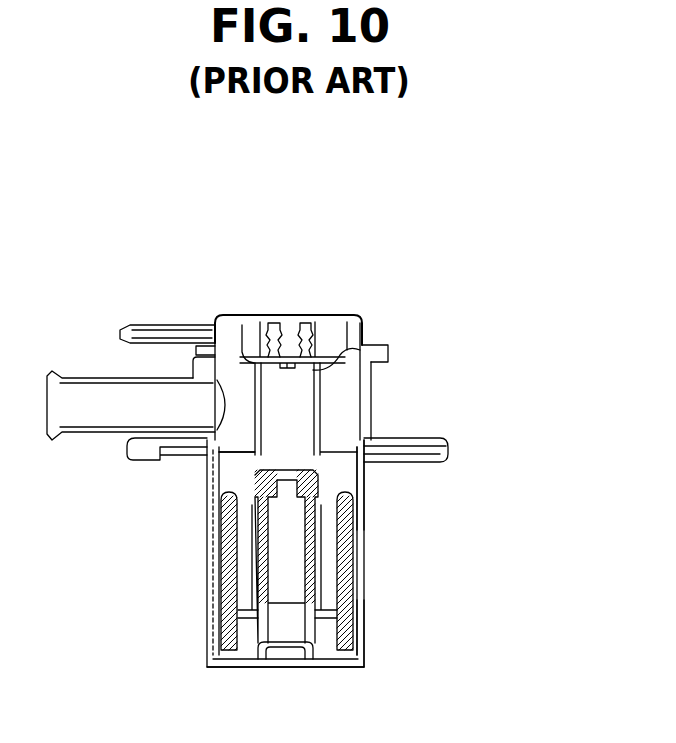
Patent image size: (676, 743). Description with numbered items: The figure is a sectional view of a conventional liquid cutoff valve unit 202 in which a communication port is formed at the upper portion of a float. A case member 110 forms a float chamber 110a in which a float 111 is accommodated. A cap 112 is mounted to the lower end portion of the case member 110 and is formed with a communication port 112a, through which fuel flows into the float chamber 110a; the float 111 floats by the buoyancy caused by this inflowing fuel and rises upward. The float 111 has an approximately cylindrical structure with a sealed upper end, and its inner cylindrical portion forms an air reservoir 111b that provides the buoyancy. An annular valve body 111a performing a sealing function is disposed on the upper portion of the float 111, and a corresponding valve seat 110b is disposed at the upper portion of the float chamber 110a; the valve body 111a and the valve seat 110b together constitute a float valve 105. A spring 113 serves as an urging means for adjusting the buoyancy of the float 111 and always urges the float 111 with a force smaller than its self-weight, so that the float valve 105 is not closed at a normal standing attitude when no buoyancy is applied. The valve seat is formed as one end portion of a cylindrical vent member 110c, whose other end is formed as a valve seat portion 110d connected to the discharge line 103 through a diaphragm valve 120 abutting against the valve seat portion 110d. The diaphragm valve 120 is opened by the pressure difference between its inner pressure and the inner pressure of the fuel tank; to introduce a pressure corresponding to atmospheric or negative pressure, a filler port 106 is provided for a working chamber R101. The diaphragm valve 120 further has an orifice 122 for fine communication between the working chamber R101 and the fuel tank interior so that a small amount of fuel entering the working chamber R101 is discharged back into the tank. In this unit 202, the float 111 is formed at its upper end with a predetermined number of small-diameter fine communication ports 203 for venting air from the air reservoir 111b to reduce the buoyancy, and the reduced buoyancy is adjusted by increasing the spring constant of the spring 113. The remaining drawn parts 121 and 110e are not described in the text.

The liquid cutoff valve unit 202 is at (199, 224).
The filler port 106 is at (165, 323).
The working chamber R101 is at (236, 342).
The contact spring 121 is at (282, 328).
The orifice 122 is at (293, 333).
The diaphragm valve 120 is at (336, 342).
The valve seat portion 110d is at (364, 345).
The cylindrical vent member 110c is at (327, 370).
The valve seat 110b is at (320, 434).
The valve body 111a is at (360, 450).
The wall portion of housing 110e is at (366, 498).
The float 111 is at (354, 530).
The case member 110 is at (365, 567).
The air reservoir 111b is at (334, 596).
The float chamber 110a is at (356, 624).
The cap 112 is at (340, 670).
The communication port 112a is at (233, 660).
The discharge line 103 is at (113, 432).
The float valve 105 is at (255, 458).
The fine communication ports 203 is at (240, 492).
The spring 113 is at (252, 613).